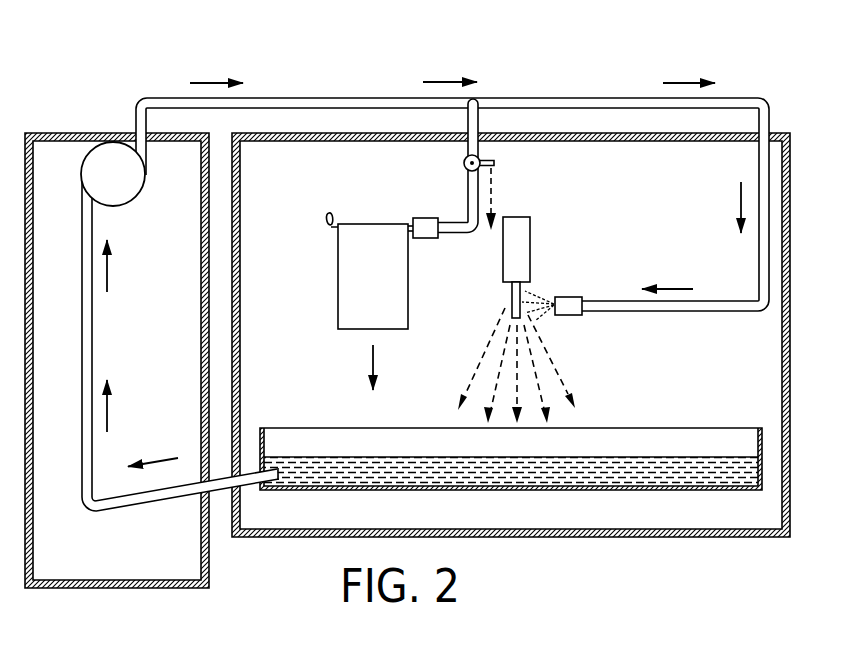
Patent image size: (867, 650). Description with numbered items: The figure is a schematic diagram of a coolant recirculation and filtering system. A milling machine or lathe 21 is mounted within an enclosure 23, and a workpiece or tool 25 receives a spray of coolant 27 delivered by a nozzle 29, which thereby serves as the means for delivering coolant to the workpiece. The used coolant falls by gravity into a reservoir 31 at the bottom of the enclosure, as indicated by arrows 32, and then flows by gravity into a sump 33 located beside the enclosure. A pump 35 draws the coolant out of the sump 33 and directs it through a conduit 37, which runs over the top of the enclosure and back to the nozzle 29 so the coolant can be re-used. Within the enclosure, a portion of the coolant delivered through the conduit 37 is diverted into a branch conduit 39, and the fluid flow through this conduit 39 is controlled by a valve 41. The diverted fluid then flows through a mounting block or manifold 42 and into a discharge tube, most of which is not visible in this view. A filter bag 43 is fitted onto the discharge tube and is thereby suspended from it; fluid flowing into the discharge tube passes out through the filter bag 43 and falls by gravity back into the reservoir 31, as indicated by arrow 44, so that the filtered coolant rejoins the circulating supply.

The milling machine or lathe 21 is at (527, 227).
The enclosure 23 is at (790, 397).
The workpiece or tool 25 is at (518, 300).
The spray of coolant 27 is at (548, 295).
The nozzle 29 is at (572, 315).
The reservoir 31 is at (707, 492).
The arrows 32 is at (562, 375).
The sump 33 is at (102, 557).
The pump 35 is at (102, 160).
The conduit 37 is at (355, 105).
The conduit 39 is at (473, 197).
The valve 41 is at (488, 158).
The mounting block or manifold 42 is at (425, 233).
The filter bag 43 is at (352, 270).
The arrow 44 is at (373, 370).